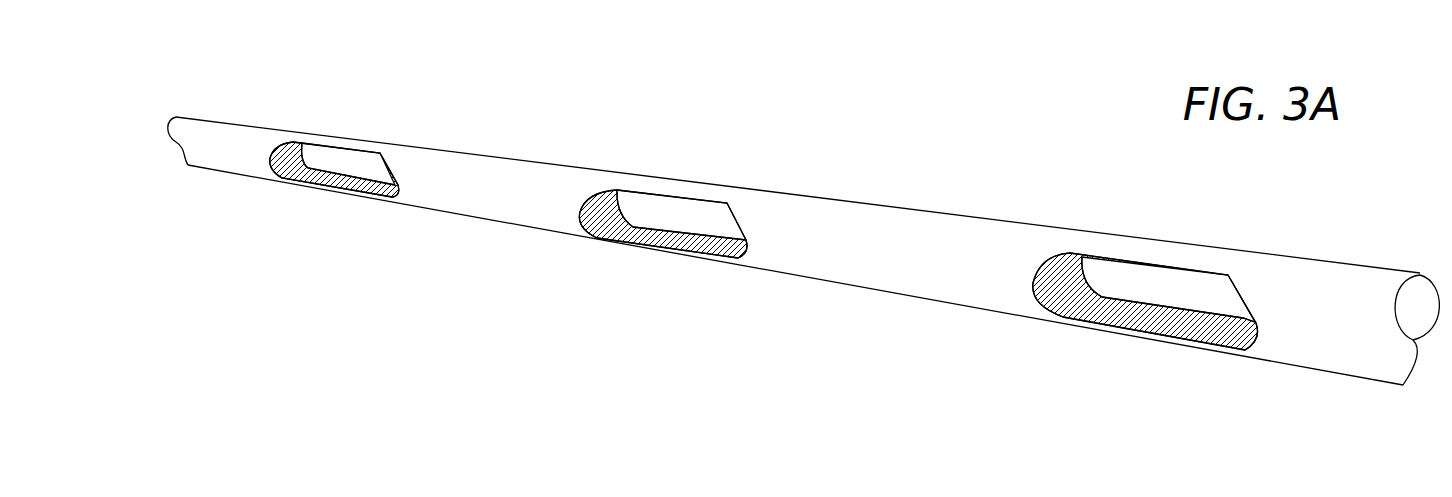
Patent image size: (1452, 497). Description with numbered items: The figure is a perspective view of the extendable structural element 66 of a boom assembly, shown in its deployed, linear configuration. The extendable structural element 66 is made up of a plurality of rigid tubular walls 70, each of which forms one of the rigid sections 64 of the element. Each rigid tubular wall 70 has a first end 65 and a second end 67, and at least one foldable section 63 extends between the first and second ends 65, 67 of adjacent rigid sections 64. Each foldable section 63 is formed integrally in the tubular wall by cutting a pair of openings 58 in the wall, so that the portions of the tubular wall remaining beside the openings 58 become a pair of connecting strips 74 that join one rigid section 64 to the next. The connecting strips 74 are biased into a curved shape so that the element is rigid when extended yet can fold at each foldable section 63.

The opening 58 is at (328, 178).
The foldable section 63 is at (303, 185).
The rigid section 64 is at (275, 122).
The first end 65 is at (253, 162).
The extendable structural element 66 is at (668, 117).
The second end 67 is at (417, 190).
The rigid tubular wall 70 is at (220, 117).
The connecting strip 74 is at (353, 133).